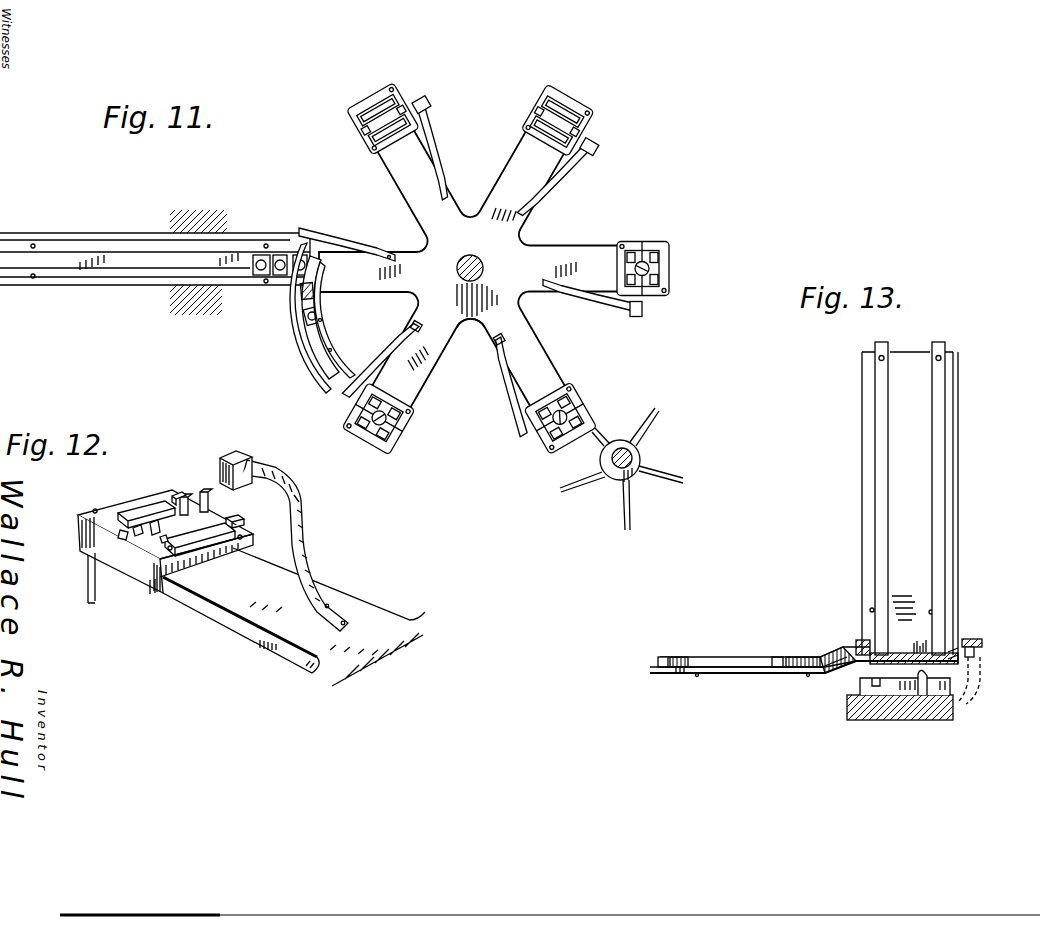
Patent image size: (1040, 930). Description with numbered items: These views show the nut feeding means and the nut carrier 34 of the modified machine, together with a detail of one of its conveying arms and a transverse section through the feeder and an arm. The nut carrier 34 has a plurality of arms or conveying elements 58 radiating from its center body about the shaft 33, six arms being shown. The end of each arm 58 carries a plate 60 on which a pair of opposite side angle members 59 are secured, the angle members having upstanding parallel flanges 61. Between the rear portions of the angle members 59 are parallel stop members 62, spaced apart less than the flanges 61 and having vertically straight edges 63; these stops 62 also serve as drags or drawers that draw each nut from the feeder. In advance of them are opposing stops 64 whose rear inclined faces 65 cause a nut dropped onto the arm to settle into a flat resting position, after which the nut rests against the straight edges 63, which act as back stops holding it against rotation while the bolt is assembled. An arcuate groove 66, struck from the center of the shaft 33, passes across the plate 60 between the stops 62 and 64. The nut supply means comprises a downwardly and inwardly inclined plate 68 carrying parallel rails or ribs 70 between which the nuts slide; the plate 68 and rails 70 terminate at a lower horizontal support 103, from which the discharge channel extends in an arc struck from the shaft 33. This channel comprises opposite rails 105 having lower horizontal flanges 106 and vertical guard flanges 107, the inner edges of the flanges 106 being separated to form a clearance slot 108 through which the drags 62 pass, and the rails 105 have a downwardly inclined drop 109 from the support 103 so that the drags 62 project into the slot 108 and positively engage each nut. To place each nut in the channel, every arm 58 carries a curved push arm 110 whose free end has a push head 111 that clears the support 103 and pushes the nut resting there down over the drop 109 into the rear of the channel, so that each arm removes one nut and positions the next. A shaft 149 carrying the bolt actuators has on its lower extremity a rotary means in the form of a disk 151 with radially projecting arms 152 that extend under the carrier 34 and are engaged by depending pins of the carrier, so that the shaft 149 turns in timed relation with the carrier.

In FIG. 11, the shaft 33 is at (479, 262).
In FIG. 11, the nut carrier 34 is at (469, 323).
In FIG. 11, the arm or conveying element 58 is at (426, 378).
In FIG. 12, the arm or conveying element 58 is at (240, 630).
In FIG. 13, the arm or conveying element 58 is at (850, 720).
In FIG. 11, the side angle members 59 is at (560, 103).
In FIG. 12, the side angle members 59 is at (137, 530).
In FIG. 11, the plate 60 is at (587, 121).
In FIG. 12, the plate 60 is at (78, 526).
In FIG. 11, the upstanding parallel flanges 61 is at (557, 112).
In FIG. 12, the upstanding parallel flanges 61 is at (133, 512).
In FIG. 12, the stop members (drags or drawers) 62 is at (190, 500).
In FIG. 13, the stop members (drags or drawers) 62 is at (924, 690).
In FIG. 12, the vertically straight edges 63 is at (173, 493).
In FIG. 12, the opposing stops 64 is at (140, 527).
In FIG. 12, the rear inclined faces 65 is at (158, 520).
In FIG. 11, the arcuate groove 66 is at (372, 130).
In FIG. 12, the arcuate groove 66 is at (157, 538).
In FIG. 11, the inclined plate 68 is at (128, 262).
In FIG. 13, the inclined plate 68 is at (910, 508).
In FIG. 11, the rails or ribs 70 is at (125, 248).
In FIG. 13, the rails or ribs 70 is at (877, 553).
In FIG. 13, the lower horizontal support 103 is at (951, 633).
In FIG. 13, the rails 105 is at (658, 664).
In FIG. 11, the lower horizontal flanges 106 is at (290, 332).
In FIG. 13, the lower horizontal flanges 106 is at (683, 674).
In FIG. 11, the vertical guard flanges 107 is at (330, 328).
In FIG. 13, the vertical guard flanges 107 is at (706, 658).
In FIG. 11, the clearance slot 108 is at (334, 380).
In FIG. 13, the downwardly inclined drop 109 is at (840, 652).
In FIG. 11, the push arm 110 is at (432, 134).
In FIG. 12, the push arm 110 is at (311, 535).
In FIG. 13, the push arm 110 is at (977, 650).
In FIG. 11, the push head 111 is at (418, 102).
In FIG. 12, the push head 111 is at (230, 456).
In FIG. 13, the push head 111 is at (981, 638).
In FIG. 11, the shaft 149 is at (615, 478).
In FIG. 11, the spoke 151 is at (603, 460).
In FIG. 11, the radially disposed arms 152 is at (650, 425).